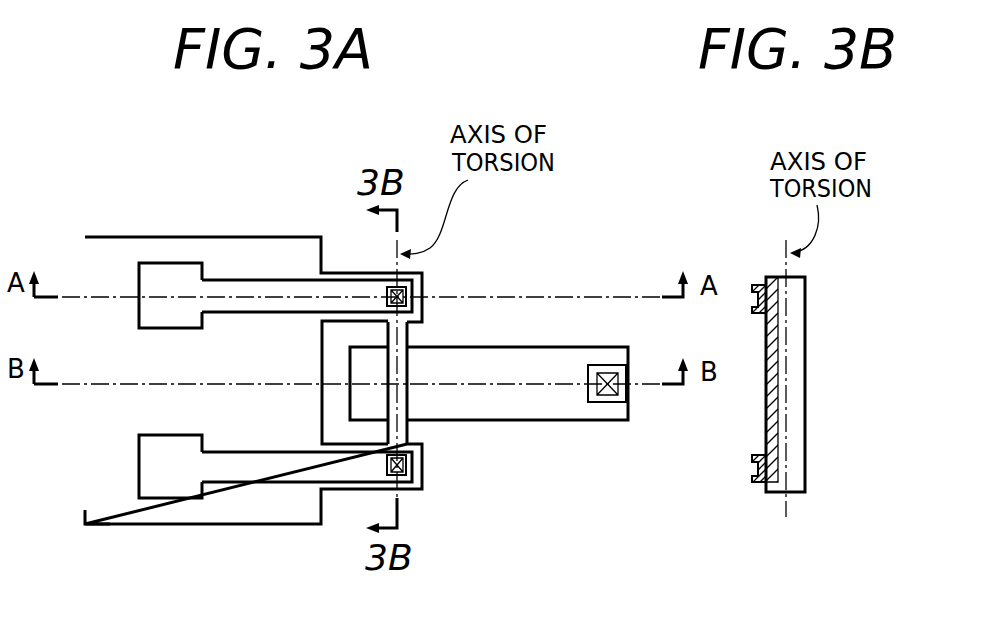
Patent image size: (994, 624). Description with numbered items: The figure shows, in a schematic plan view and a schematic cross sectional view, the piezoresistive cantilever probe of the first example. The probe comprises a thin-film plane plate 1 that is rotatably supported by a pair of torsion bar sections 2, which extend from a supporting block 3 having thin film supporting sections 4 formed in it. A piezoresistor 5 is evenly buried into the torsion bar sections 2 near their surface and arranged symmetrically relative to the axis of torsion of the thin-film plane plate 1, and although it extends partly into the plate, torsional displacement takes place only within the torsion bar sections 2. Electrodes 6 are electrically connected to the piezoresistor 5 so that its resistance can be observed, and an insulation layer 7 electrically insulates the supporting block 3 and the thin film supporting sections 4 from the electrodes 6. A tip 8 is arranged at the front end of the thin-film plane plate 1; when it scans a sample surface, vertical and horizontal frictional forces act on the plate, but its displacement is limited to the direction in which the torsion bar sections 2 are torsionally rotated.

In FIG. 3A, the thin-film plane plate 1 is at (547, 347).
In FIG. 3A, the torsion bar sections 2 is at (397, 335).
In FIG. 3A, the supporting block 3 is at (233, 527).
In FIG. 3A, the thin film supporting sections 4 is at (362, 315).
In FIG. 3B, the piezoresistor 5 is at (768, 402).
In FIG. 3A, the electrodes 6 is at (186, 436).
In FIG. 3B, the electrodes 6 is at (754, 475).
In FIG. 3A, the insulation layer 7 is at (122, 517).
In FIG. 3B, the insulation layer 7 is at (763, 493).
In FIG. 3A, the tip 8 is at (605, 365).